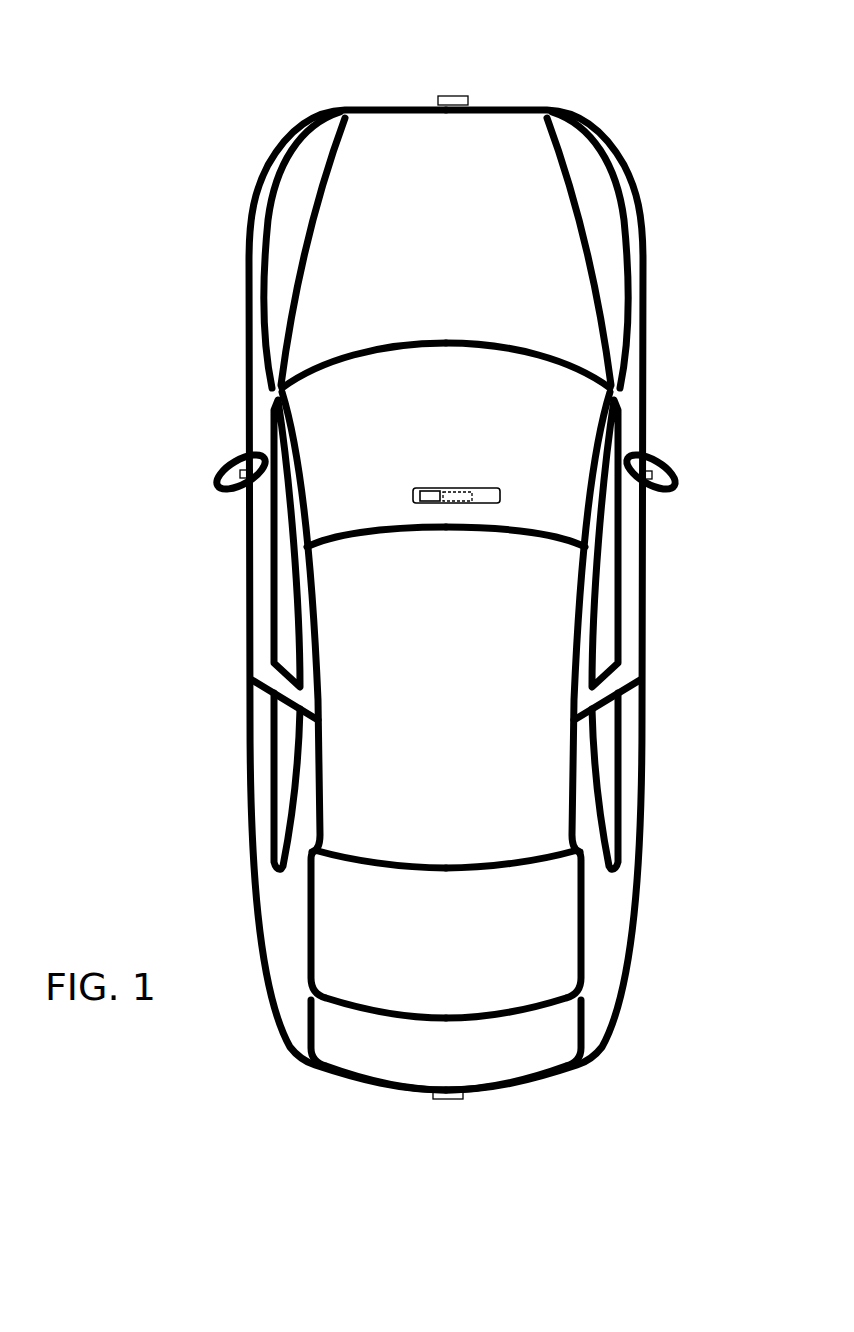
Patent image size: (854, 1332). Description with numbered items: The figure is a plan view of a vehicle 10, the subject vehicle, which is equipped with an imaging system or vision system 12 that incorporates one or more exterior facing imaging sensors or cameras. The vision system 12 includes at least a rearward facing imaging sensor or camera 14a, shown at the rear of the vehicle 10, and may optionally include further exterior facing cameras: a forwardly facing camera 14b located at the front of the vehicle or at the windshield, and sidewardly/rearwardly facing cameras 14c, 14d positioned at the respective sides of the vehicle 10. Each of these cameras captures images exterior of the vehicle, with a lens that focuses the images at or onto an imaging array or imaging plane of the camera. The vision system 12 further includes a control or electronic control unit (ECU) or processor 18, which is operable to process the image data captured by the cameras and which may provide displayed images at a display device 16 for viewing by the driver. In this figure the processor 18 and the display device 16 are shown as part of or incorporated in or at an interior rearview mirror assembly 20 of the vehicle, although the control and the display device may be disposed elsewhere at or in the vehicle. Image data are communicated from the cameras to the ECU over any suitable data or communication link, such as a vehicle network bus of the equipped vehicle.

The vehicle 10 is at (195, 198).
The vision system 12 is at (386, 1128).
The rearward facing camera 14a is at (450, 1098).
The forwardly facing camera 14b is at (457, 96).
The sidewardly/rearwardly facing camera 14c is at (232, 468).
The sidewardly/rearwardly facing camera 14d is at (660, 468).
The display device 16 is at (430, 489).
The processor 18 is at (448, 487).
The interior rearview mirror assembly 20 is at (500, 489).